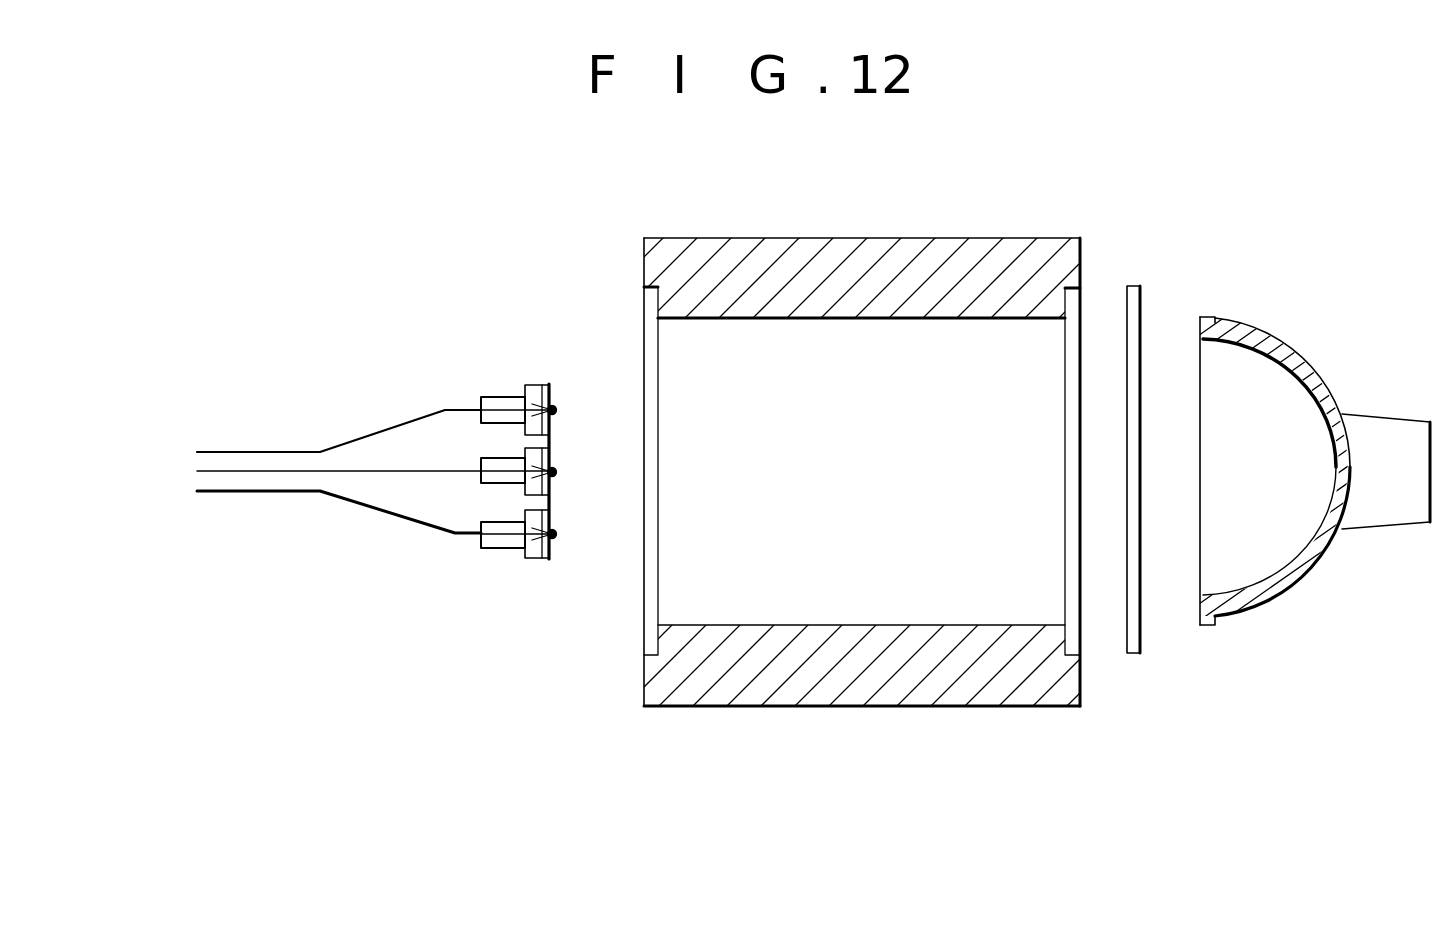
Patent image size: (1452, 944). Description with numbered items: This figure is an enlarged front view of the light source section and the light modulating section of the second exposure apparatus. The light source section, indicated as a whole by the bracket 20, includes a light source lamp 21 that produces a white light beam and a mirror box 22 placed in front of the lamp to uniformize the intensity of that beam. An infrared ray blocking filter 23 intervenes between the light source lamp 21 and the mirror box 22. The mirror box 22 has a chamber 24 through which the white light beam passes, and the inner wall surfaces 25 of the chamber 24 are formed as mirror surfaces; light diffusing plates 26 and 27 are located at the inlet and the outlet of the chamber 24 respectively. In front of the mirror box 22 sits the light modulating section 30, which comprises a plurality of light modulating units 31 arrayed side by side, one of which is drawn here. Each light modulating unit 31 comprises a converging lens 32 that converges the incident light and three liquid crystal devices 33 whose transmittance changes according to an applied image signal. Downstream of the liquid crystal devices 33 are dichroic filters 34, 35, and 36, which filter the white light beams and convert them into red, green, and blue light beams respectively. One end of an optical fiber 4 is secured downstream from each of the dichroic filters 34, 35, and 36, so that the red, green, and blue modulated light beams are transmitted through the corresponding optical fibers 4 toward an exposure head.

The optical fiber 4 is at (390, 508).
The light source unit 20 is at (640, 785).
The light source lamp 21 is at (1283, 590).
The mirror box 22 is at (961, 697).
The infrared ray blocking filter 23 is at (1133, 660).
The chamber 24 is at (851, 531).
The inner wall surfaces 25 is at (872, 322).
The light diffusing plate 26 is at (1065, 405).
The light diffusing plate 27 is at (657, 403).
The light modulating section 30 is at (450, 652).
The light modulating unit 31 is at (459, 459).
The converging lens 32 is at (553, 559).
The liquid crystal device 33 is at (554, 508).
The dichroic filter 34 is at (538, 392).
The dichroic filter 35 is at (523, 493).
The dichroic filter 36 is at (526, 561).